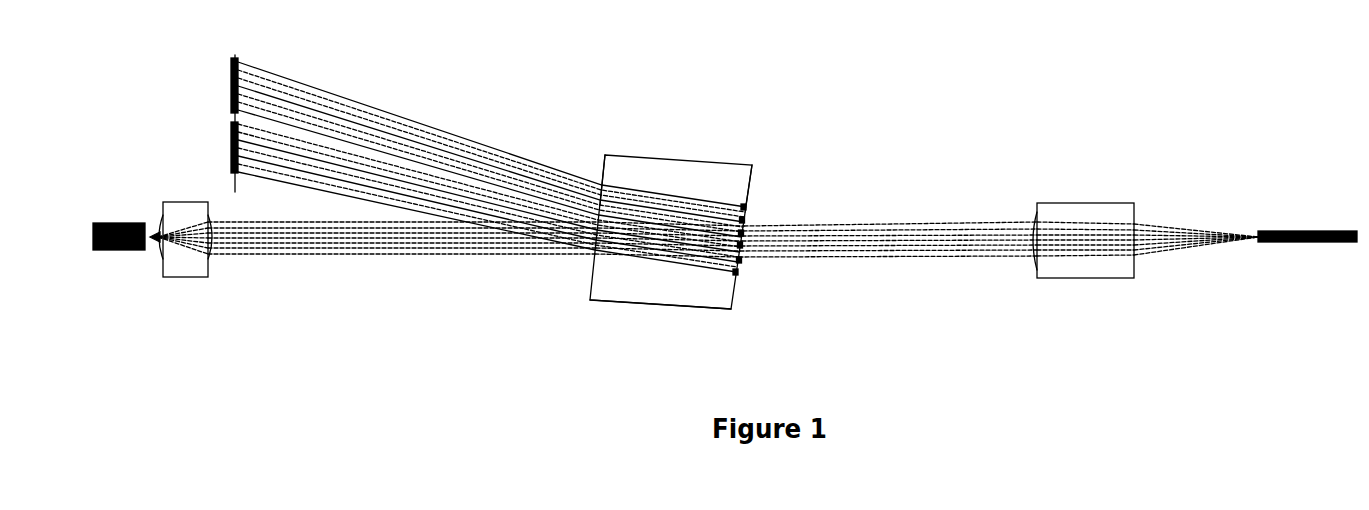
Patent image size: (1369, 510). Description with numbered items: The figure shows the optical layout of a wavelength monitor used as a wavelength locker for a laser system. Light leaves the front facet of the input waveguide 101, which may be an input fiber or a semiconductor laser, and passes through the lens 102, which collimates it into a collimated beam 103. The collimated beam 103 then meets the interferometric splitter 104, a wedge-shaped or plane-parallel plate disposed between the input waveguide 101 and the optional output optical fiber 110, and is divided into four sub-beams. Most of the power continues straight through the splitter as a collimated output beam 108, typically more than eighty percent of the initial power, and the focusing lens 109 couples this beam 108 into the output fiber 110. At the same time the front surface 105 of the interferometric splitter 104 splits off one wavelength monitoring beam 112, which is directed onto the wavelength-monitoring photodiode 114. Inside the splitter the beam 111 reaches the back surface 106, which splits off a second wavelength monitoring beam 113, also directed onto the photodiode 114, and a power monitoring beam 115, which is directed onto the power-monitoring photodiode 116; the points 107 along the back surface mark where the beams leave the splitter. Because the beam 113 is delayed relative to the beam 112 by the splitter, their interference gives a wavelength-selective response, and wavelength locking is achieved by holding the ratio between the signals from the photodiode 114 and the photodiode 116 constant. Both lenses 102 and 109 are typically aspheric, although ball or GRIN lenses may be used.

The input waveguide 101 is at (121, 274).
The lens 102 is at (188, 270).
The collimated beam 103 is at (403, 275).
The interferometric splitter 104 is at (671, 203).
The front surface 105 is at (593, 152).
The back surface 106 is at (757, 178).
The output coupling points 107 is at (747, 263).
The collimated output beam 108 is at (888, 261).
The focusing lens 109 is at (1145, 212).
The output optical fiber 110 is at (1307, 207).
The beam 111 is at (660, 286).
The wavelength monitoring beam 112 is at (312, 190).
The second wavelength monitoring beam 113 is at (358, 153).
The wavelength-monitoring photodiode 114 is at (198, 147).
The power monitoring beam 115 is at (453, 148).
The power-monitoring photodiode 116 is at (198, 120).